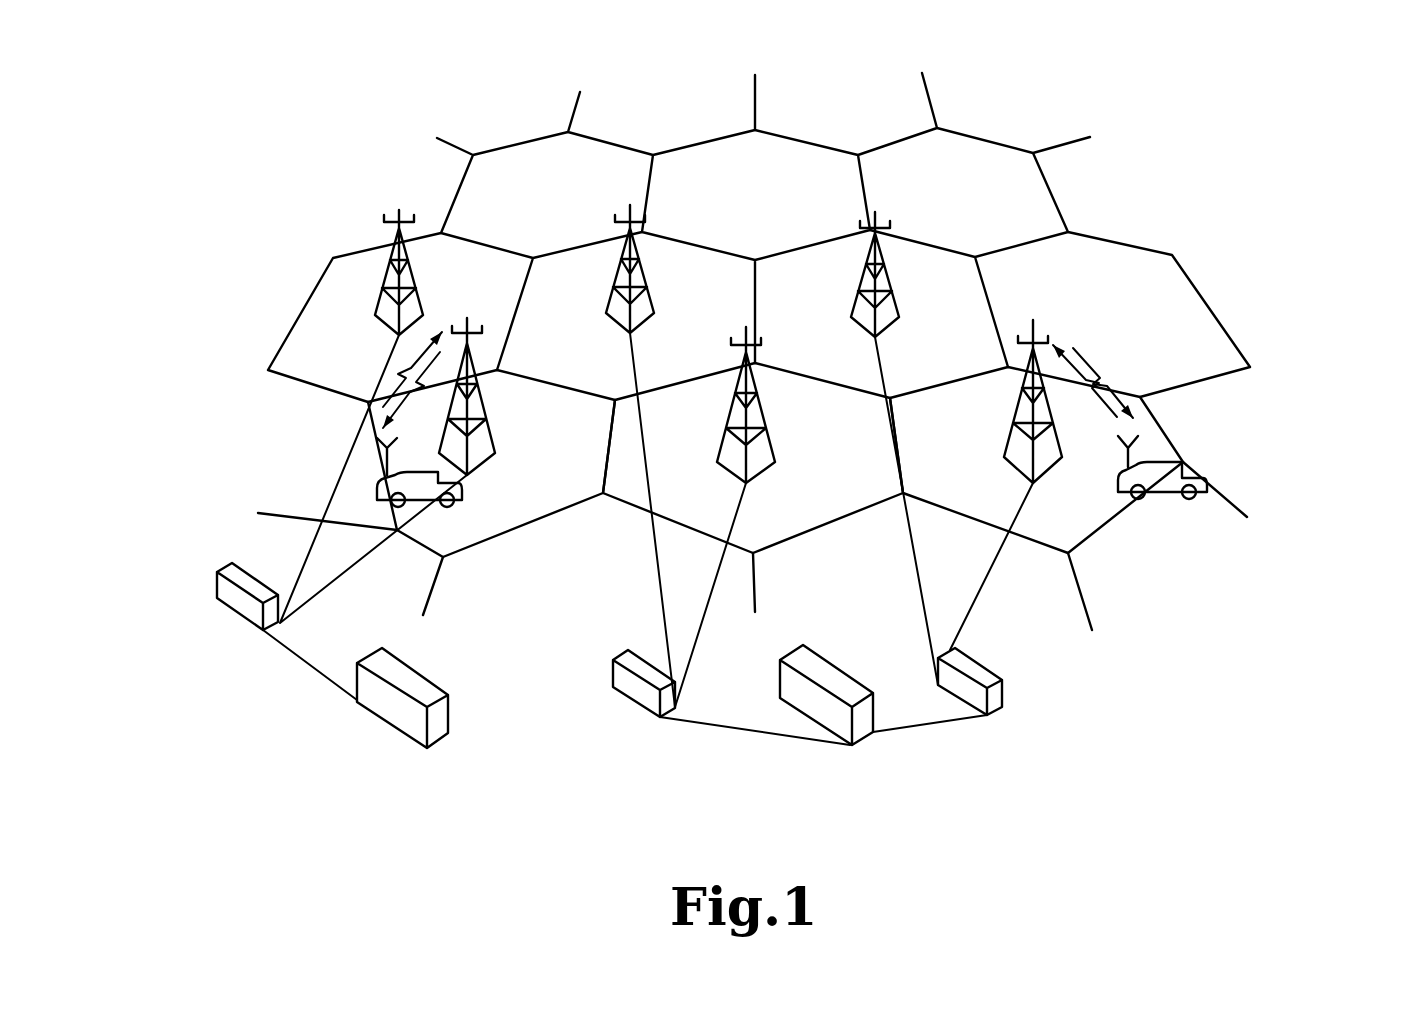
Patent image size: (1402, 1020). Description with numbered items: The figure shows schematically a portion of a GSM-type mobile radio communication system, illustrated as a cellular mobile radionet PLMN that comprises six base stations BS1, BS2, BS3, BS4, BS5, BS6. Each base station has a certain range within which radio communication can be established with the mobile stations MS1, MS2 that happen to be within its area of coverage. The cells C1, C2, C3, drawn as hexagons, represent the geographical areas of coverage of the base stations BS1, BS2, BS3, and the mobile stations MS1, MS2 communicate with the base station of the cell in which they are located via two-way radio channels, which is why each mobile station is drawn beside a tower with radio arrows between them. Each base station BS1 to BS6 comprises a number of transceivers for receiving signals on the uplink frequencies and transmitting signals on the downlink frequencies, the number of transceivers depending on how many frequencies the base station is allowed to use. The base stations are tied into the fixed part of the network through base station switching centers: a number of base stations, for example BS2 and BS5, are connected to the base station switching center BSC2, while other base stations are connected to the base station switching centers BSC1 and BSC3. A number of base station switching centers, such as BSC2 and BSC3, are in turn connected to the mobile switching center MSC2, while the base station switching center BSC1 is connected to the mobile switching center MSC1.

The cellular mobile radionet PLMN is at (313, 222).
The base station BS1 is at (487, 463).
The base station BS2 is at (763, 467).
The base station BS3 is at (1057, 410).
The base station BS4 is at (403, 273).
The base station BS5 is at (620, 262).
The base station BS6 is at (888, 280).
The base station switching center BSC1 is at (233, 598).
The base station switching center BSC2 is at (632, 692).
The base station switching center BSC3 is at (997, 698).
The mobile switching center MSC1 is at (395, 717).
The mobile switching center MSC2 is at (828, 718).
The mobile station MS1 is at (393, 473).
The mobile station MS2 is at (1183, 461).
The cell C1 is at (472, 515).
The cell C2 is at (680, 502).
The cell C3 is at (1090, 518).